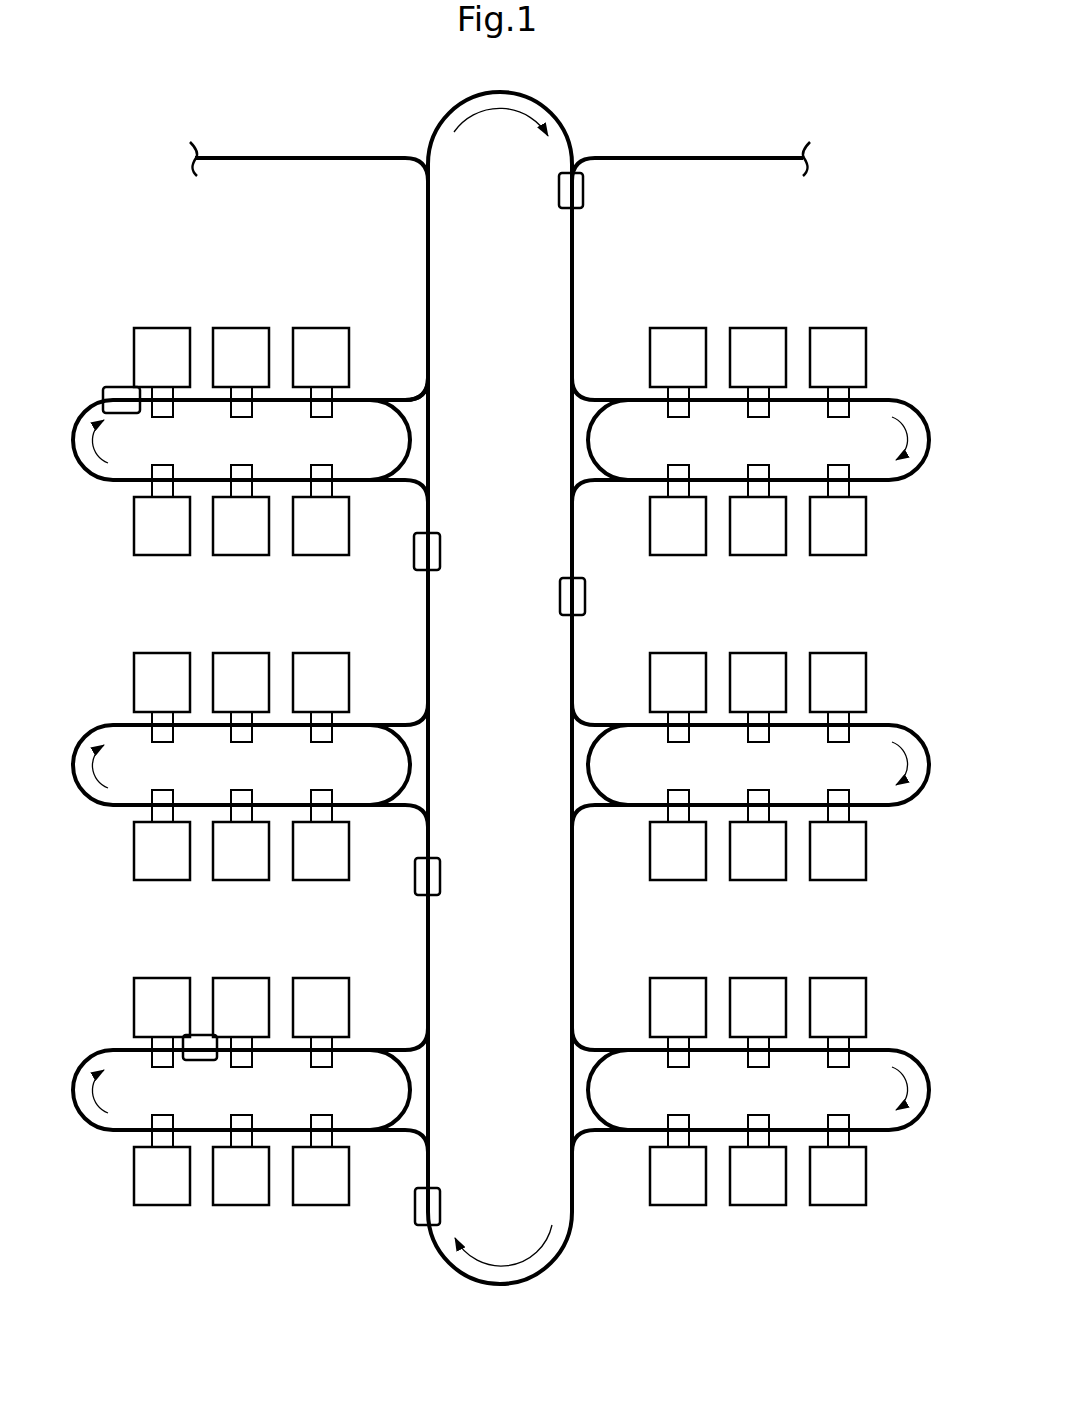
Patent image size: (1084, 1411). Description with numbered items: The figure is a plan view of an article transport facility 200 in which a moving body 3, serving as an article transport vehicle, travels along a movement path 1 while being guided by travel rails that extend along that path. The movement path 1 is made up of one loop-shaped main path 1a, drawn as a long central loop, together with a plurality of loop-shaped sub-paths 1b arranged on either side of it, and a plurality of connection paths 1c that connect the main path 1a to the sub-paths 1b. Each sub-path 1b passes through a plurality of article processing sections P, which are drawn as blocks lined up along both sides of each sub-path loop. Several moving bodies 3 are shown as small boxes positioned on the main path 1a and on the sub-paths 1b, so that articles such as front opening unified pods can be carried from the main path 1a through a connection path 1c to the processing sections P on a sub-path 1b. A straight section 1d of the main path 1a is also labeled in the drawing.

The article transport facility 200 is at (724, 100).
The movement path 1 is at (497, 676).
The main path 1a is at (584, 127).
The sub-path 1b is at (130, 482).
The connection path 1c is at (426, 393).
The straight portion of main path 1d is at (570, 551).
The moving body 3 is at (583, 190).
The article processing section P is at (322, 328).